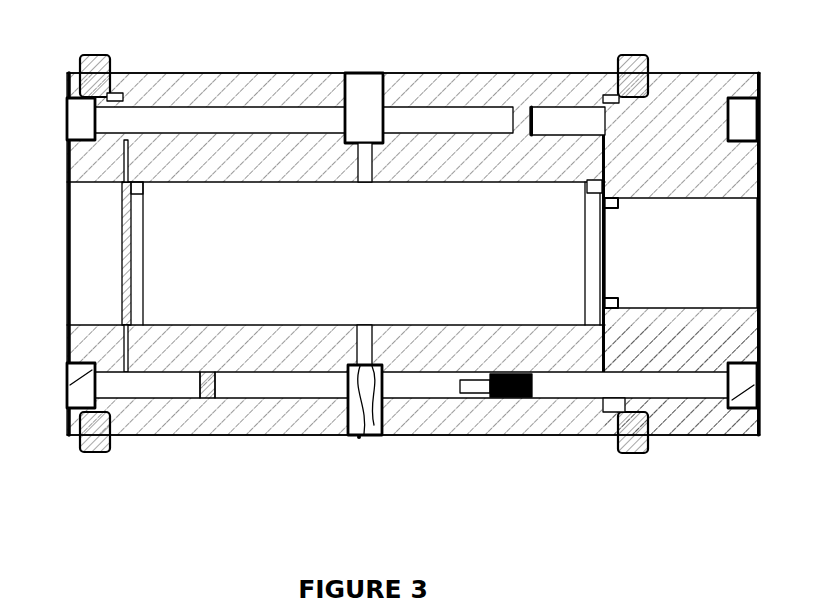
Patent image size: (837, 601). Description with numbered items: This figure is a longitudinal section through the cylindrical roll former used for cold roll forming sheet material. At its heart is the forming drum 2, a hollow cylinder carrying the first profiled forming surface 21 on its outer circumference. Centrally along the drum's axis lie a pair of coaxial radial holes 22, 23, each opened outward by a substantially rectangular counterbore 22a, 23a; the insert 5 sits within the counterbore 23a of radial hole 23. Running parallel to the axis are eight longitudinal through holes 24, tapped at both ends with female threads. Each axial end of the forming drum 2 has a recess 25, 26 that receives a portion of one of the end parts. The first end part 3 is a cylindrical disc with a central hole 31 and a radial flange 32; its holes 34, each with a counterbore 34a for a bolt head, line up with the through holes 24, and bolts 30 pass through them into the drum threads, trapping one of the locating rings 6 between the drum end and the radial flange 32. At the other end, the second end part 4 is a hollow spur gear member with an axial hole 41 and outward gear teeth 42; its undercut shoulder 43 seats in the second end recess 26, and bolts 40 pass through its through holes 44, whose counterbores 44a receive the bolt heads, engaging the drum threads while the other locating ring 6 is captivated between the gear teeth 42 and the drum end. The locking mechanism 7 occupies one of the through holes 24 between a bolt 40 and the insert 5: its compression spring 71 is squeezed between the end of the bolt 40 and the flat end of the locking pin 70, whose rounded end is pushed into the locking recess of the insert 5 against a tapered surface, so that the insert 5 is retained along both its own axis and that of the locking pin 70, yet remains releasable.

The forming drum 2 is at (357, 273).
The first end part 3 is at (67, 165).
The second end part 4 is at (760, 160).
The insert 5 is at (359, 440).
The locating rings 6 is at (93, 55).
The locking mechanism 7 is at (477, 467).
The first profiled forming surface 21 is at (515, 72).
The radial hole 22 is at (371, 97).
The counterbore 22a is at (365, 88).
The radial hole 23 is at (322, 397).
The counterbore 23a is at (345, 345).
The longitudinal through holes 24 is at (445, 118).
The recess 25 is at (120, 100).
The end recess 26 is at (612, 102).
The threaded bolt 30 is at (165, 123).
The central hole 31 is at (108, 272).
The radial flange 32 is at (70, 440).
The holes 34 is at (63, 377).
The counterbore 34a is at (78, 400).
The threaded bolt 40 is at (550, 120).
The axial hole 41 is at (691, 267).
The gear teeth 42 is at (707, 437).
The shoulder 43 is at (612, 437).
The through holes 44 is at (760, 375).
The counterbore 44a is at (742, 373).
The locking pin 70 is at (432, 402).
The compression spring 71 is at (516, 440).